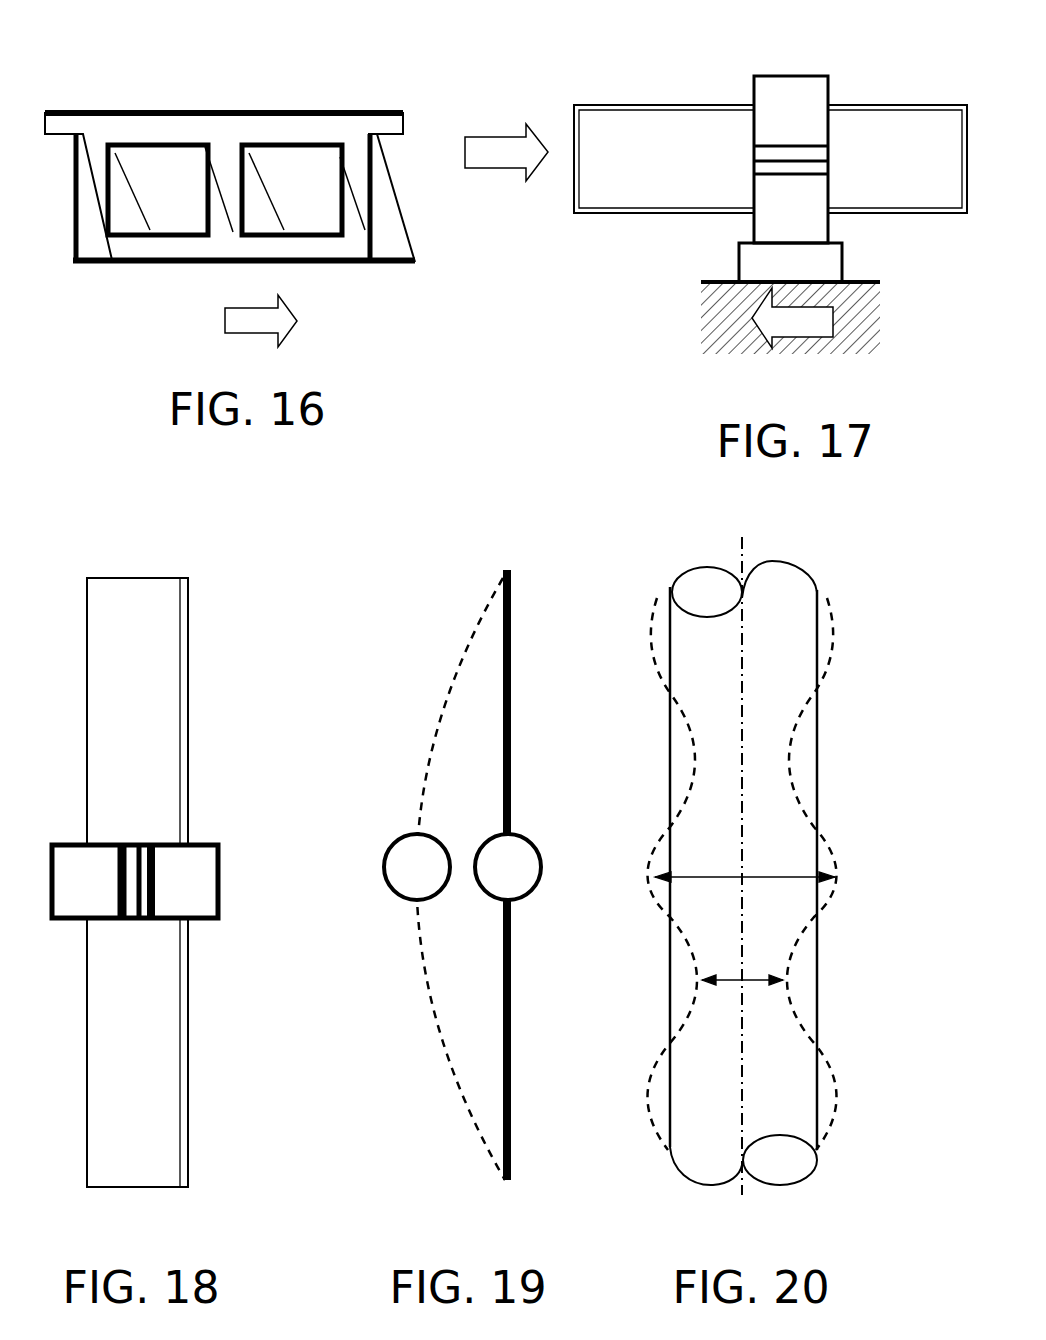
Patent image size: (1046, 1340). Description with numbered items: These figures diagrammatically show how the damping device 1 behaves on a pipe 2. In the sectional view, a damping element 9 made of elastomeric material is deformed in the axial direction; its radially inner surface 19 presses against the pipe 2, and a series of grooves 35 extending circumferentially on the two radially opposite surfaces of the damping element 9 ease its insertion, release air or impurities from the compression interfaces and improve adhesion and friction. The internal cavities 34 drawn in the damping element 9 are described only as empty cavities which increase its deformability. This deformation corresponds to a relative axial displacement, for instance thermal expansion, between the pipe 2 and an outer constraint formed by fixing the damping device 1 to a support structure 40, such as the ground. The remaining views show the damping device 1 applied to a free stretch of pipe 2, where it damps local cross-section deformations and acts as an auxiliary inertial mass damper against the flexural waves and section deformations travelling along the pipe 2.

In FIG. 17, the damping device 1 is at (787, 91).
In FIG. 18, the damping device 1 is at (198, 885).
In FIG. 17, the pipe 2 is at (639, 131).
In FIG. 18, the pipe 2 is at (157, 758).
In FIG. 19, the pipe 2 is at (513, 737).
In FIG. 16, the damping element 9 is at (258, 130).
In FIG. 16, the radially inner surface of the damping element 19 is at (338, 265).
In FIG. 16, the window 34 is at (170, 173).
In FIG. 16, the grooves 35 is at (225, 107).
In FIG. 17, the support structure 40 is at (867, 304).